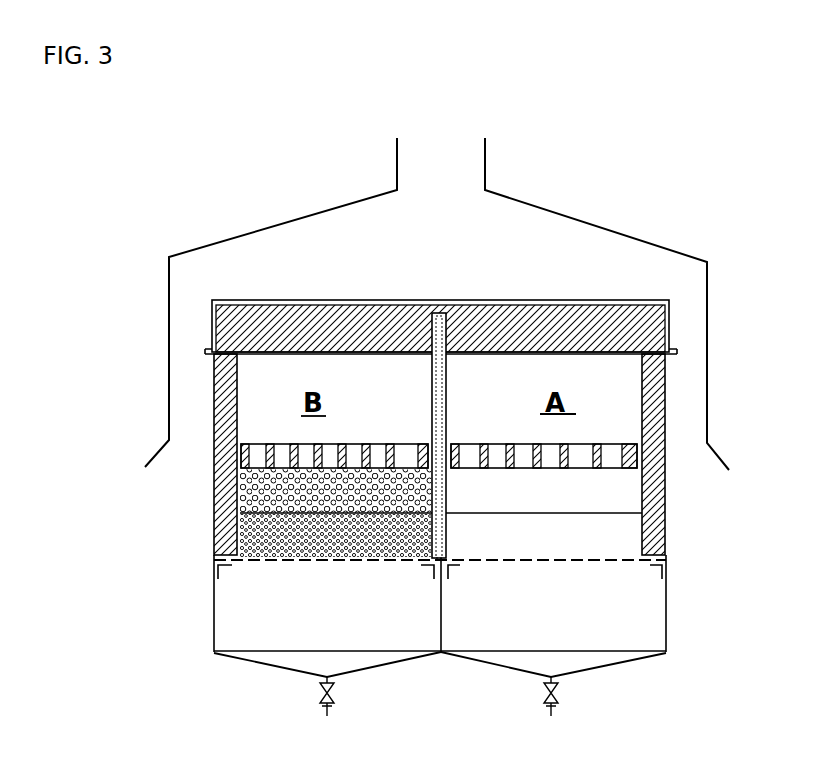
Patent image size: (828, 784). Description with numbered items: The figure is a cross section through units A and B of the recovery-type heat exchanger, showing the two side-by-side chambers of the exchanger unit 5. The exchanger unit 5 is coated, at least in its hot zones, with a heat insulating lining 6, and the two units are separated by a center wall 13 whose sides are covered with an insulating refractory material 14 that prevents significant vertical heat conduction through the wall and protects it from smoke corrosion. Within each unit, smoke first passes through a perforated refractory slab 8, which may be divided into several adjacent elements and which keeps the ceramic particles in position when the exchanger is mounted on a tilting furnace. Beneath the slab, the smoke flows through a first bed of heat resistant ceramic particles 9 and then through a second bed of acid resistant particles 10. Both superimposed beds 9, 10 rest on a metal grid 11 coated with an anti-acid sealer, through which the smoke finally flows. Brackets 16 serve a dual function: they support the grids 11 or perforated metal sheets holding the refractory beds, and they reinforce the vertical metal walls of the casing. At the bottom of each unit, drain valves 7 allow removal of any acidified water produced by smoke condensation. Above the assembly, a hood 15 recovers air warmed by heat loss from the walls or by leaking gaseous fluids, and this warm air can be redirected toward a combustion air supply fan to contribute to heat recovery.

The exchanger unit 5 is at (250, 662).
The heat insulating lining 6 is at (222, 408).
The drain valves 7 is at (322, 694).
The perforated refractory slab 8 is at (277, 456).
The first bed of heat resistant ceramic particles 9 is at (258, 492).
The second bed of acid resistant particles 10 is at (255, 539).
The metal grid 11 is at (258, 562).
The center wall 13 is at (430, 625).
The insulating refractory material 14 is at (446, 416).
The hood 15 is at (283, 223).
The brackets 16 is at (430, 580).